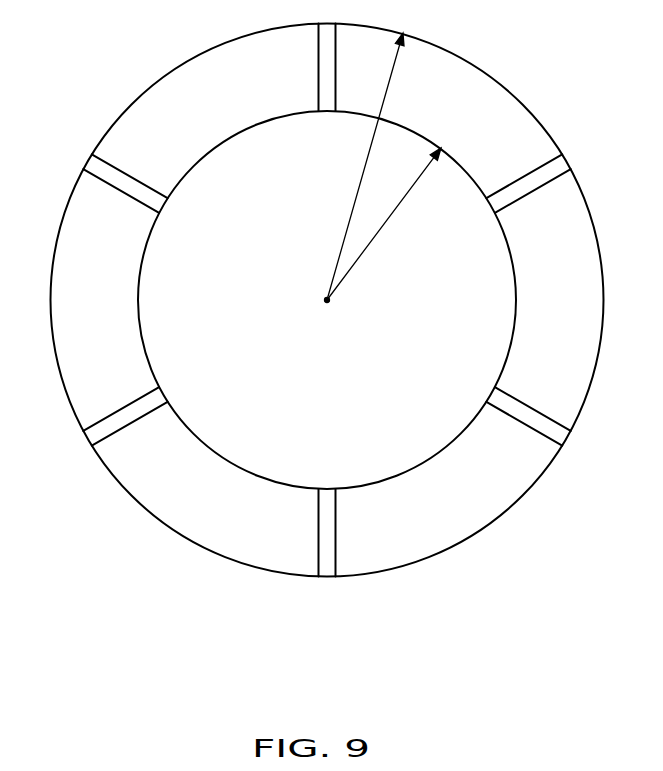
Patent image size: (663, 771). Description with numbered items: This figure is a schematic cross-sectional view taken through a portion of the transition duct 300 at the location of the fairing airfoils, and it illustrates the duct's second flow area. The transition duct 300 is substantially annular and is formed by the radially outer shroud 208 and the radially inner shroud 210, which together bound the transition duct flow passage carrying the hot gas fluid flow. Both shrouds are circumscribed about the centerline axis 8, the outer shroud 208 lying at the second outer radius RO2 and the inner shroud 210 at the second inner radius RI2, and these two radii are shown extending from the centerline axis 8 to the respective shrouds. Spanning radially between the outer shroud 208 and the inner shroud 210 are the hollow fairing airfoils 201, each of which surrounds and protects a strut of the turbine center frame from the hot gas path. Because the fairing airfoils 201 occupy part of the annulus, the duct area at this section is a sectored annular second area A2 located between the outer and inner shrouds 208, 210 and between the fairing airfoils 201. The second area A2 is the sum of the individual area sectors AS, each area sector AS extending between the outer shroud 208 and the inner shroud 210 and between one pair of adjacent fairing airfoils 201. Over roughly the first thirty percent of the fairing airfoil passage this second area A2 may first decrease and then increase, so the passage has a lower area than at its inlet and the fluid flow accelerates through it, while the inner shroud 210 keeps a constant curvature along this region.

The transition duct 300 is at (331, 345).
The inner shroud 210 is at (331, 321).
The outer shroud 208 is at (545, 118).
The area sector AS is at (184, 416).
The fairing airfoil 201 is at (318, 71).
The second area A2 is at (157, 86).
The centerline axis 8 is at (330, 302).
The second outer radius RO2 is at (346, 232).
The second inner radius RI2 is at (393, 220).